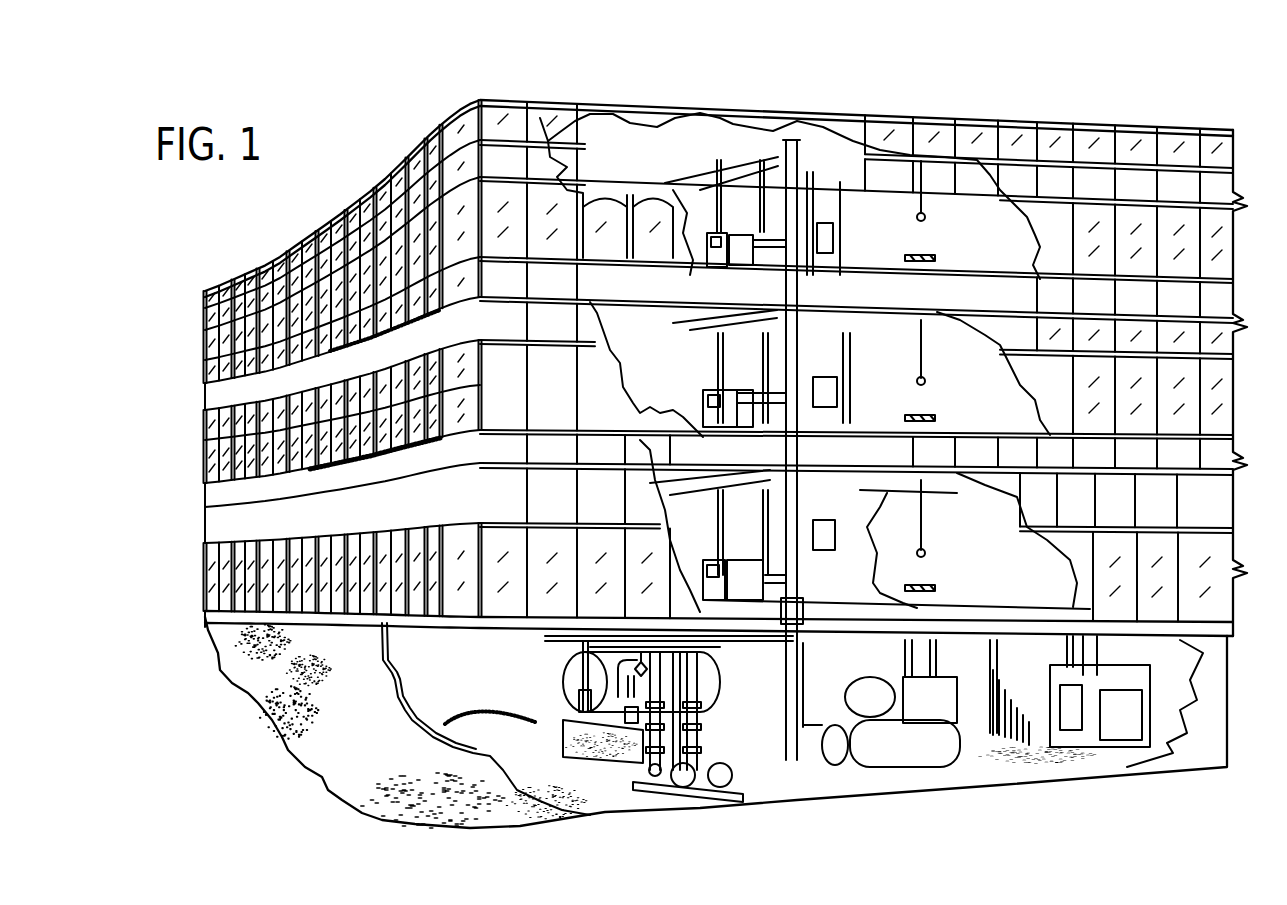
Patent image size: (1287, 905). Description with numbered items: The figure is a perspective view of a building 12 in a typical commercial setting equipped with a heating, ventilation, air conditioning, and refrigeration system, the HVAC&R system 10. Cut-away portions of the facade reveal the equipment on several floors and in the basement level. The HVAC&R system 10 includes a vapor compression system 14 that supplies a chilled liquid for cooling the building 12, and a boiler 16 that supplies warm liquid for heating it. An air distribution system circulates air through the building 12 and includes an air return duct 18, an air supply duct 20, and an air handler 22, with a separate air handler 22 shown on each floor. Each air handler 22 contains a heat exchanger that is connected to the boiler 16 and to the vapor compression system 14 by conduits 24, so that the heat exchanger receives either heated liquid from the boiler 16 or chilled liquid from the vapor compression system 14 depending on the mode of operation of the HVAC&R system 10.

The HVAC&R system 10 is at (1003, 795).
The building 12 is at (1097, 124).
The vapor compression system 14 is at (908, 745).
The boiler 16 is at (570, 690).
The air return duct 18 is at (700, 420).
The air supply duct 20 is at (760, 165).
The air handler 22 is at (742, 388).
The conduits 24 is at (800, 600).